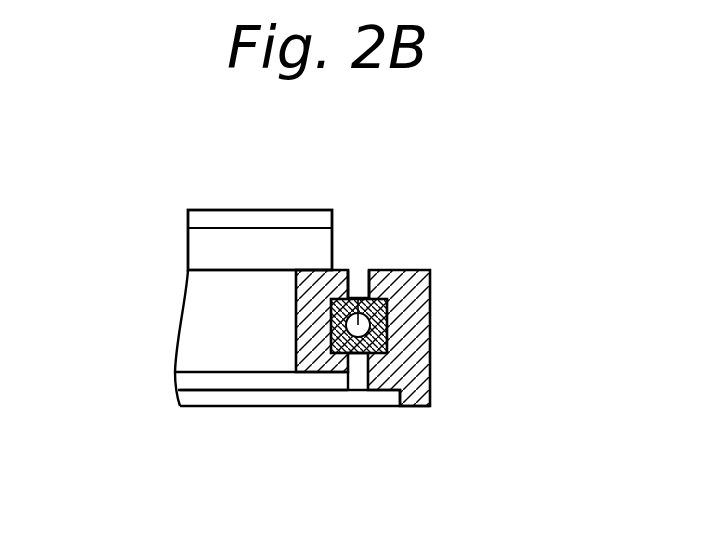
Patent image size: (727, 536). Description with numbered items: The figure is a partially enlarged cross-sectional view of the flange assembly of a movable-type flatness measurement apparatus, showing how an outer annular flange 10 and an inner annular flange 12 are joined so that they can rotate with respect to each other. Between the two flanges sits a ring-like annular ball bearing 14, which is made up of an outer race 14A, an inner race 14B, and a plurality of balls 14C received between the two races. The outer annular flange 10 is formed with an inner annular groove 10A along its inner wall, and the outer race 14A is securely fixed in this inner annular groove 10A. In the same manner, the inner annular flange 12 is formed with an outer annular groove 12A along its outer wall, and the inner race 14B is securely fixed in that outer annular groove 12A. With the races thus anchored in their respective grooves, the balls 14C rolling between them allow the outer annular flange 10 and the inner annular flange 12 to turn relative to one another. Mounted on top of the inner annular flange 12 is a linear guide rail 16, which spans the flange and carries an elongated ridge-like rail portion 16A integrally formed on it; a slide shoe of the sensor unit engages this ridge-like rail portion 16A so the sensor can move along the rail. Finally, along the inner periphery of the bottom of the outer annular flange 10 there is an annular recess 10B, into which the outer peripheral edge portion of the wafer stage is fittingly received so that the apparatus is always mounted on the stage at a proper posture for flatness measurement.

The outer annular flange 10 is at (432, 278).
The inner annular groove 10A is at (388, 324).
The annular recess 10B is at (387, 407).
The inner annular flange 12 is at (294, 298).
The outer annular groove 12A is at (333, 358).
The annular ball bearing 14 is at (380, 355).
The outer race 14A is at (370, 323).
The inner race 14B is at (347, 327).
The balls 14C is at (390, 270).
The linear guide rail 16 is at (335, 240).
The ridge-like rail portion 16A is at (247, 210).